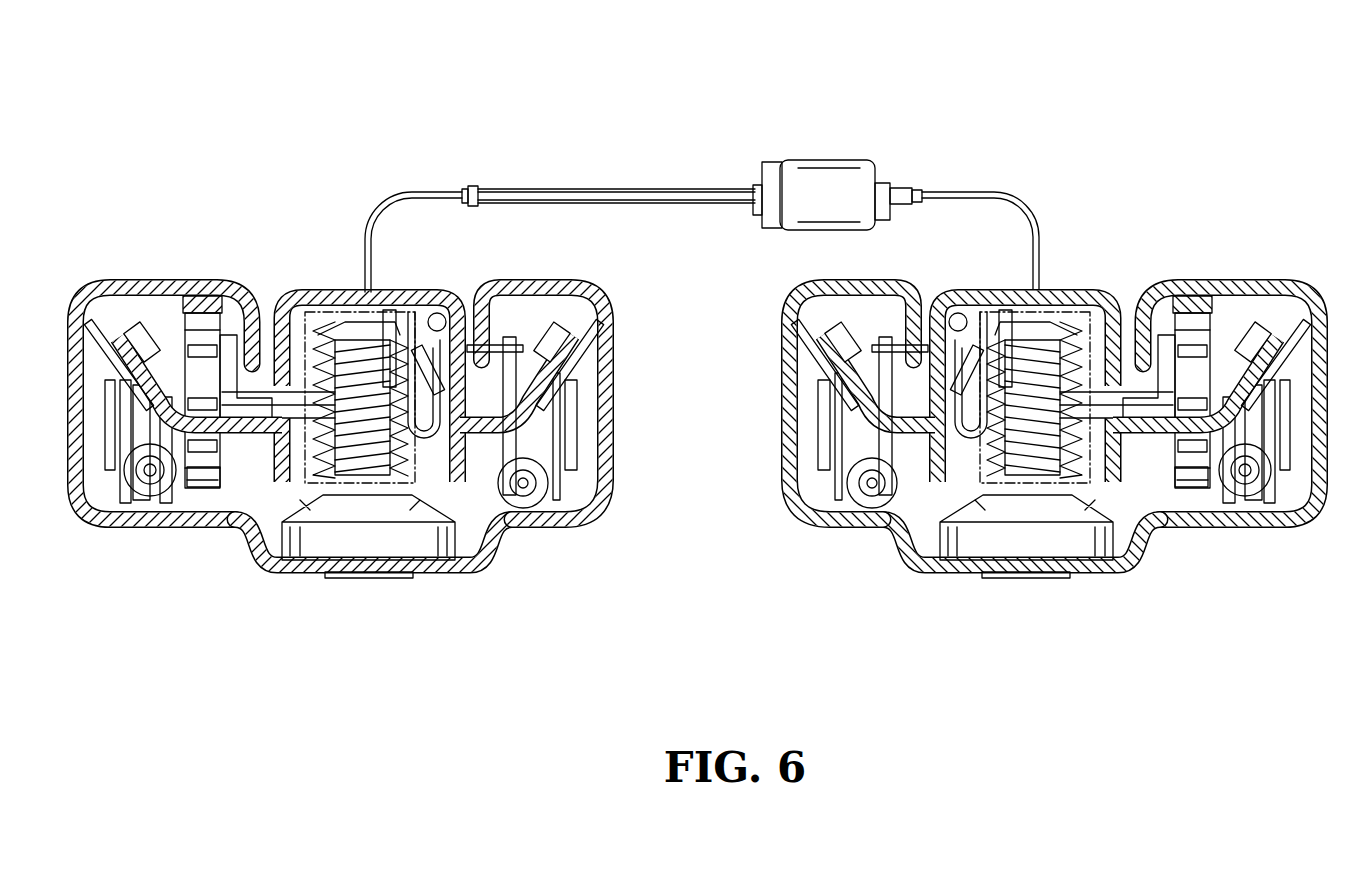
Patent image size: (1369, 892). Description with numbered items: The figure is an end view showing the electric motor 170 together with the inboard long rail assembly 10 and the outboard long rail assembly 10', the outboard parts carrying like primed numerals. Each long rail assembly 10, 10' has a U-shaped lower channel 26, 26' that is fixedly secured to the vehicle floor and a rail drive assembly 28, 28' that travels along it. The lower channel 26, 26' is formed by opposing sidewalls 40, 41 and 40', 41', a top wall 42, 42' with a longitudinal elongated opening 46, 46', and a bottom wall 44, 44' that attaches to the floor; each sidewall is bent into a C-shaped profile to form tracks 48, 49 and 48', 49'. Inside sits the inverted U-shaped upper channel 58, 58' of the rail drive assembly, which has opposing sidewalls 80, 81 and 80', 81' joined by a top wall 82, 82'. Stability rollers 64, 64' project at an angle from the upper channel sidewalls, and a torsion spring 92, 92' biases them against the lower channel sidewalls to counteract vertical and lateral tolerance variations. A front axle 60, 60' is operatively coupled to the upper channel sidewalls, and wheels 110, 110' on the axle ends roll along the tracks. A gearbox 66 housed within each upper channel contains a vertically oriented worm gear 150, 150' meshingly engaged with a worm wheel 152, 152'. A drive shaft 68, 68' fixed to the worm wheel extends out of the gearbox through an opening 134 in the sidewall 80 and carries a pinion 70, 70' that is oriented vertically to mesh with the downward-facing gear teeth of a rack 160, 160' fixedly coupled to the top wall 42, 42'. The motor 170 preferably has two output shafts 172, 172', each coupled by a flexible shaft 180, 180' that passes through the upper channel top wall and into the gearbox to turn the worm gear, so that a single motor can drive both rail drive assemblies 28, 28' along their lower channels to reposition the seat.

The long rail assembly 10 is at (267, 129).
The long rail assembly 10' is at (1085, 134).
The U-shaped lower channel 26 is at (57, 266).
The U-shaped lower channel 26' is at (1340, 262).
The rail drive assembly 28 is at (257, 207).
The rail drive assembly 28' is at (1116, 198).
The sidewall 40 is at (146, 404).
The sidewall 40' is at (1249, 404).
The sidewall 41 is at (567, 404).
The sidewall 41' is at (824, 404).
The top wall 42 is at (346, 252).
The top wall 42' is at (1059, 257).
The bottom wall 44 is at (373, 581).
The bottom wall 44' is at (1021, 582).
The elongated opening 46 is at (341, 354).
The elongated opening 46' is at (1004, 350).
The track 48 is at (78, 526).
The track 48' is at (1317, 523).
The track 49 is at (610, 534).
The track 49' is at (796, 534).
The upper channel 58 is at (431, 255).
The upper channel 58' is at (1116, 245).
The front axle 60 is at (240, 459).
The front axle 60' is at (1159, 459).
The stability rollers 64 is at (355, 332).
The stability rollers 64' is at (1048, 332).
The gearbox 66 is at (380, 320).
The drive shaft 68 is at (273, 520).
The drive shaft 68' is at (1128, 522).
The pinion 70 is at (200, 521).
The pinion 70' is at (1200, 531).
The sidewall 80 is at (278, 333).
The sidewall 80' is at (1123, 325).
The sidewall 81 is at (492, 365).
The sidewall 81' is at (923, 365).
The top wall 82 is at (379, 333).
The top wall 82' is at (1017, 325).
The torsion spring 92 is at (336, 503).
The torsion spring 92' is at (1059, 503).
The wheels 110 is at (345, 488).
The wheels 110' is at (1067, 482).
The opening 134 is at (270, 432).
The worm gear 150 is at (341, 343).
The worm gear 150' is at (1072, 365).
The worm wheel 152 is at (375, 517).
The worm wheel 152' is at (1013, 517).
The rack 160 is at (194, 353).
The rack 160' is at (1205, 345).
The electric motor 170 is at (822, 160).
The output shaft 172 is at (608, 163).
The output shaft 172' is at (906, 167).
The flexible shaft 180 is at (413, 210).
The flexible shaft 180' is at (980, 210).